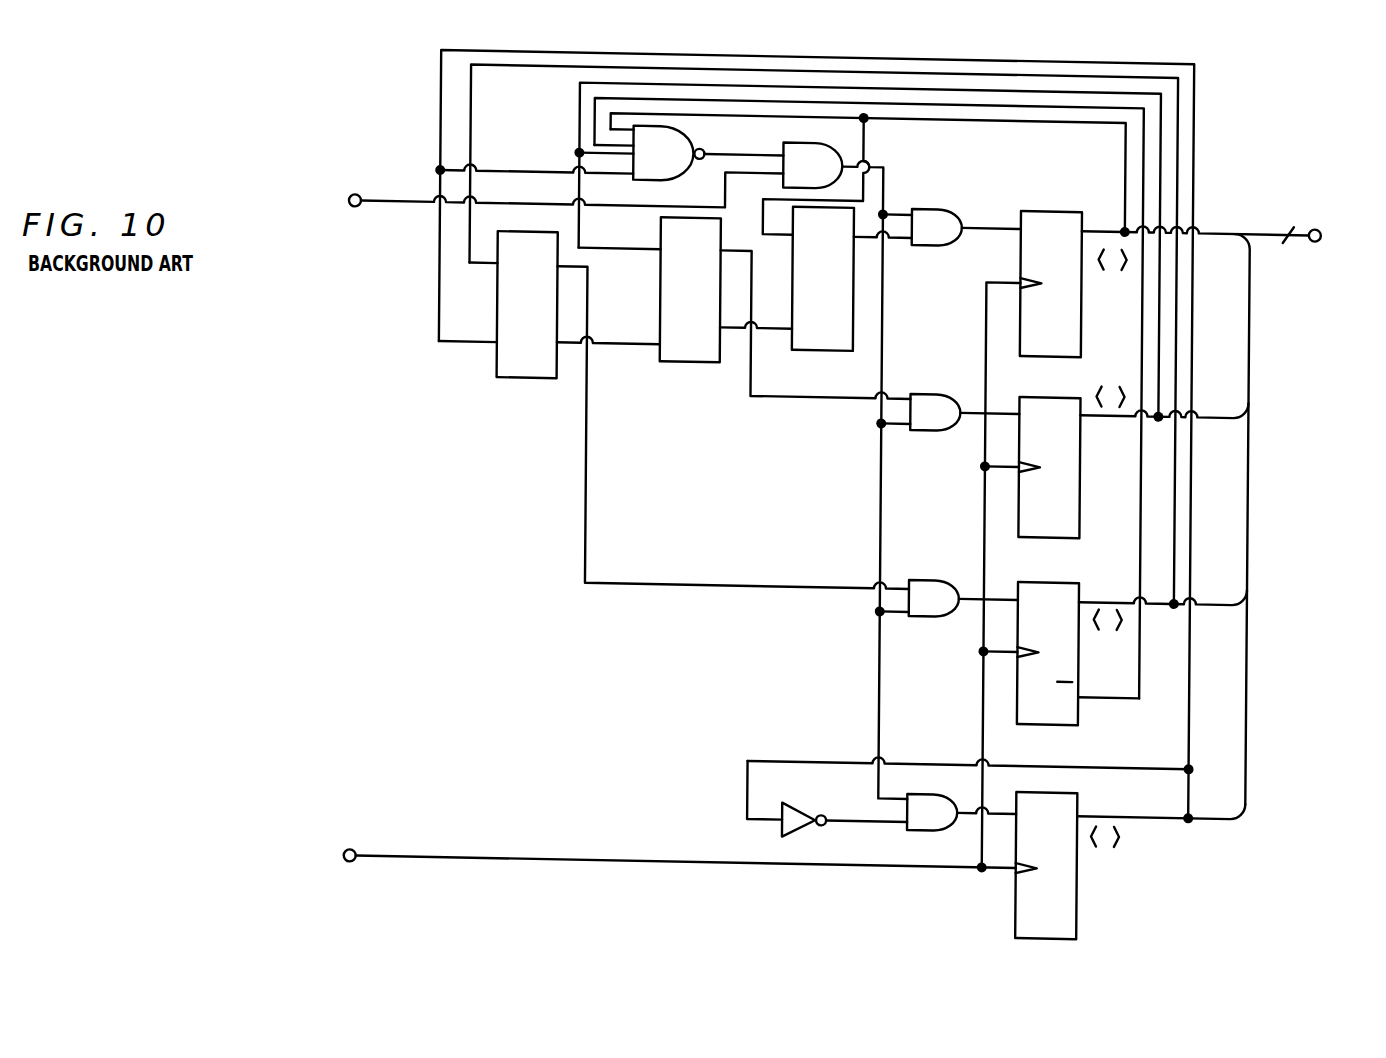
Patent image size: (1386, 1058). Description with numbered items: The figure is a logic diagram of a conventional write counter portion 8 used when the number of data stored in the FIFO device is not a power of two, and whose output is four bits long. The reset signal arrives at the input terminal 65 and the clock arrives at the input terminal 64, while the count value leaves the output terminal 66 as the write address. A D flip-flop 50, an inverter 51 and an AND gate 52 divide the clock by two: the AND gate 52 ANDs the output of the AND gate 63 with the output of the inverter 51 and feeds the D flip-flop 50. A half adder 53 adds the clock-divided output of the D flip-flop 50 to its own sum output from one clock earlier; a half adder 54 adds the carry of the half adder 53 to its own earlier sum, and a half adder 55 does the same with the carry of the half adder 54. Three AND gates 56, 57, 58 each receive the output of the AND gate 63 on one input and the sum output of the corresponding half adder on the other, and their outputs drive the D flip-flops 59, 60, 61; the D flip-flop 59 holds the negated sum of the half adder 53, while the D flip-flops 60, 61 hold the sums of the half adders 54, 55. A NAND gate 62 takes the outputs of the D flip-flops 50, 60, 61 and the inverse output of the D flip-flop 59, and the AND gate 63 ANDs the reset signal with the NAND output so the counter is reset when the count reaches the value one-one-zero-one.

The write counter portion 8 is at (319, 474).
The D flip-flop 50 is at (1078, 896).
The inverter 51 is at (803, 800).
The AND gate 52 is at (935, 796).
The half adder 53 is at (533, 368).
The half adder 54 is at (697, 350).
The half adder 55 is at (801, 281).
The AND gate 56 is at (940, 601).
The AND gate 57 is at (940, 418).
The AND gate 58 is at (940, 231).
The D flip-flop 59 is at (1074, 698).
The D flip-flop 60 is at (1075, 503).
The D flip-flop 61 is at (1076, 311).
The NAND gate 62 is at (643, 164).
The AND gate 63 is at (826, 171).
The input terminal 64 is at (353, 849).
The input terminal 65 is at (353, 194).
The output terminal 66 is at (1310, 230).